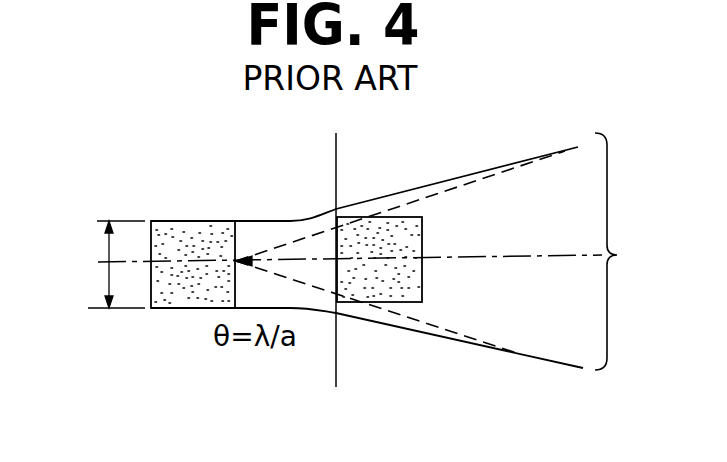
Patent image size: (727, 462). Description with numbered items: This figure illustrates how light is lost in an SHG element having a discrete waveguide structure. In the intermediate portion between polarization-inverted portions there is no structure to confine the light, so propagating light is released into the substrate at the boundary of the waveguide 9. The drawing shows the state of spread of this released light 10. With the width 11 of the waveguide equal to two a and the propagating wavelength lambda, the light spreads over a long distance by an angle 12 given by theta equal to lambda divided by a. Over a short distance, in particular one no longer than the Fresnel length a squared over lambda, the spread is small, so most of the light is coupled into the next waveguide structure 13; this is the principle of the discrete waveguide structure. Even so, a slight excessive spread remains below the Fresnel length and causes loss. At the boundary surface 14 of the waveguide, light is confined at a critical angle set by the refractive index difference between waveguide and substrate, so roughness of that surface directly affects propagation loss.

The waveguide 9 is at (180, 240).
The boundary surface 14 is at (213, 221).
The angle 12 is at (300, 282).
The next waveguide structure 13 is at (383, 237).
The light 10 is at (618, 255).
The width 11 is at (108, 275).